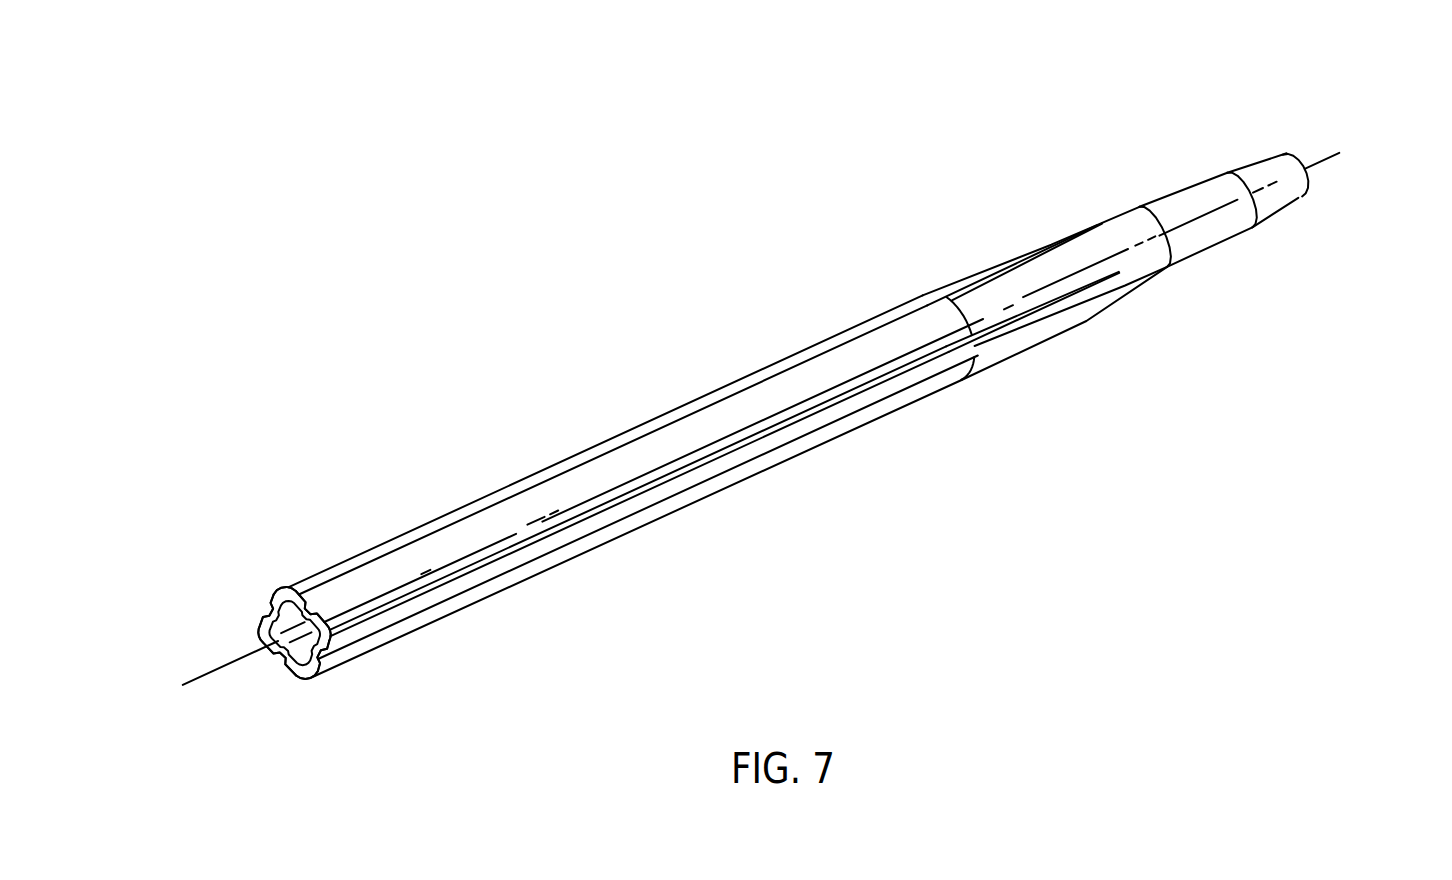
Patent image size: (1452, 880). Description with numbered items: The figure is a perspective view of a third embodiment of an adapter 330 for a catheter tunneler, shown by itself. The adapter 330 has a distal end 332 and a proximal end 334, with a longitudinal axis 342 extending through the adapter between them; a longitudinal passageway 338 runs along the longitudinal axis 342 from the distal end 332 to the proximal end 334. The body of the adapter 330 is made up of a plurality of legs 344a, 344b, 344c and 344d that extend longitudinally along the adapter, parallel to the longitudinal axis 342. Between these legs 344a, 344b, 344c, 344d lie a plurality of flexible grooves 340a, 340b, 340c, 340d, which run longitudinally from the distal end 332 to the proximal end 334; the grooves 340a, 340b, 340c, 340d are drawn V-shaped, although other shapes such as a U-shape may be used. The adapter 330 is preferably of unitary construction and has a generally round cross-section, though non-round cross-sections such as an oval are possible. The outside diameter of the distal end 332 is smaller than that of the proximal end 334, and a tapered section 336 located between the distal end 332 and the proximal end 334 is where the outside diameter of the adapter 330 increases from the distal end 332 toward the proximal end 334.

The adapter 330 is at (770, 425).
The distal end 332 is at (1263, 146).
The proximal end 334 is at (256, 578).
The tapered section 336 is at (882, 330).
The longitudinal passageway 338 is at (279, 656).
The flexible groove 340a is at (293, 580).
The flexible groove 340b is at (244, 621).
The flexible groove 340c is at (308, 686).
The flexible groove 340d is at (358, 658).
The longitudinal axis 342 is at (1337, 178).
The leg 344a is at (364, 568).
The leg 344b is at (404, 649).
The leg 344c is at (273, 691).
The leg 344d is at (249, 591).